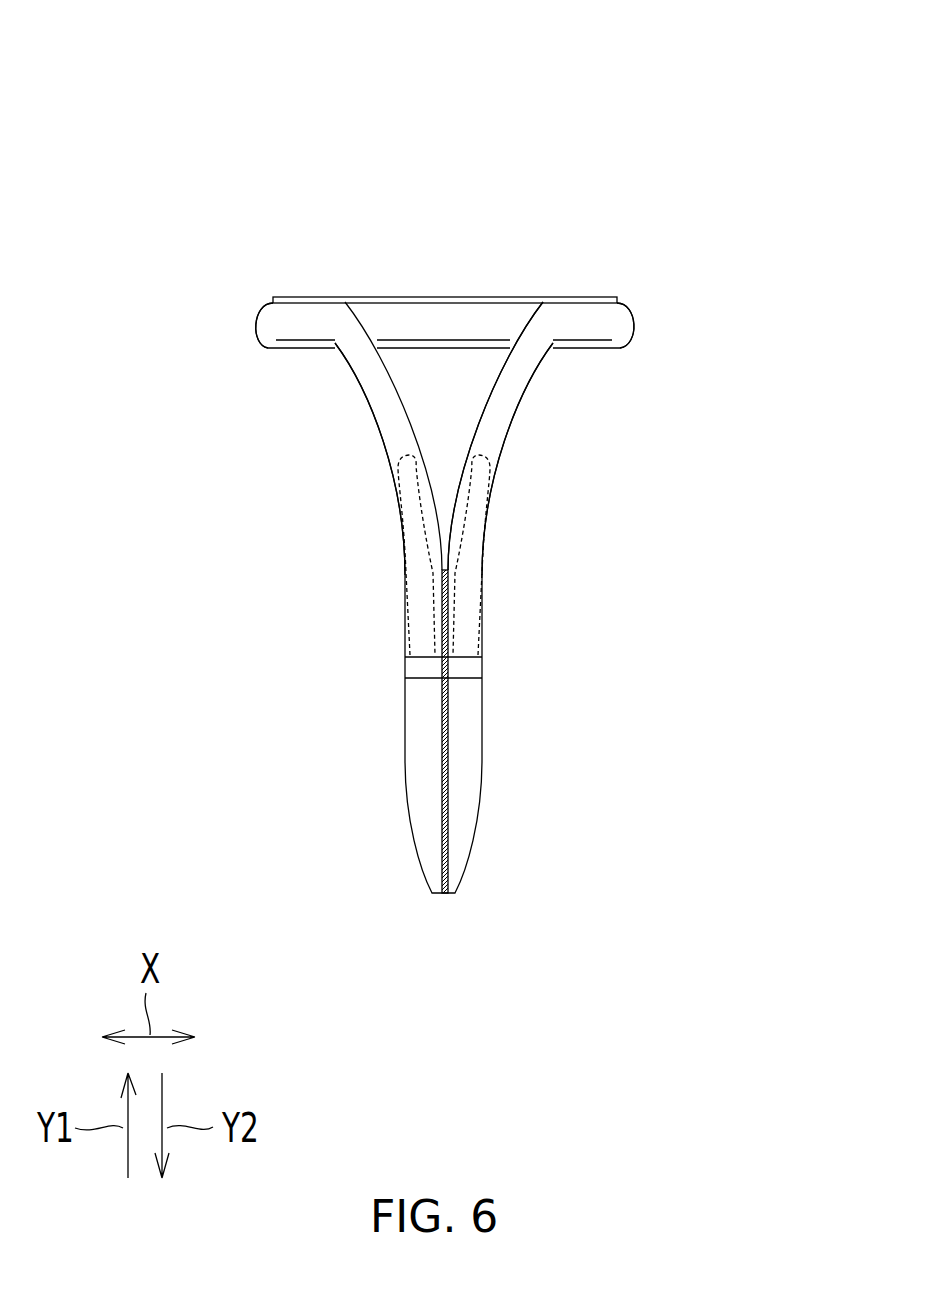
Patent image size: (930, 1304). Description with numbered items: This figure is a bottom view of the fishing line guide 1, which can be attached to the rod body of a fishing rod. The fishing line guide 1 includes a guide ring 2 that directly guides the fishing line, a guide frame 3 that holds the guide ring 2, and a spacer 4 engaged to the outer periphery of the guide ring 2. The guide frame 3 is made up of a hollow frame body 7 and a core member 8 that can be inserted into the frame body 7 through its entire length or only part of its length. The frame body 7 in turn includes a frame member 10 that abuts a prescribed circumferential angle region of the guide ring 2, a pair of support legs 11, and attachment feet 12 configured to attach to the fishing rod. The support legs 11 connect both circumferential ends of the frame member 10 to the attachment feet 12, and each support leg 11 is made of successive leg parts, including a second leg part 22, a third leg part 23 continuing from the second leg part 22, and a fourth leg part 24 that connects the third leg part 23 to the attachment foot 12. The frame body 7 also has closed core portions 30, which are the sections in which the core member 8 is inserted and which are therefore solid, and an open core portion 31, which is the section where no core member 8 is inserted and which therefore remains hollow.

The fishing line guide 1 is at (688, 142).
The guide ring 2 is at (462, 296).
The guide frame 3 is at (633, 322).
The spacer 4 is at (442, 325).
The frame body 7 is at (512, 430).
The core member 8 is at (392, 558).
The frame member 10 is at (253, 322).
The support leg 11 is at (395, 507).
The attachment foot 12 is at (404, 762).
The second leg part 22 is at (373, 430).
The third leg part 23 is at (404, 633).
The fourth leg part 24 is at (404, 668).
The closed core portion 30 is at (403, 600).
The open core portion 31 is at (348, 373).